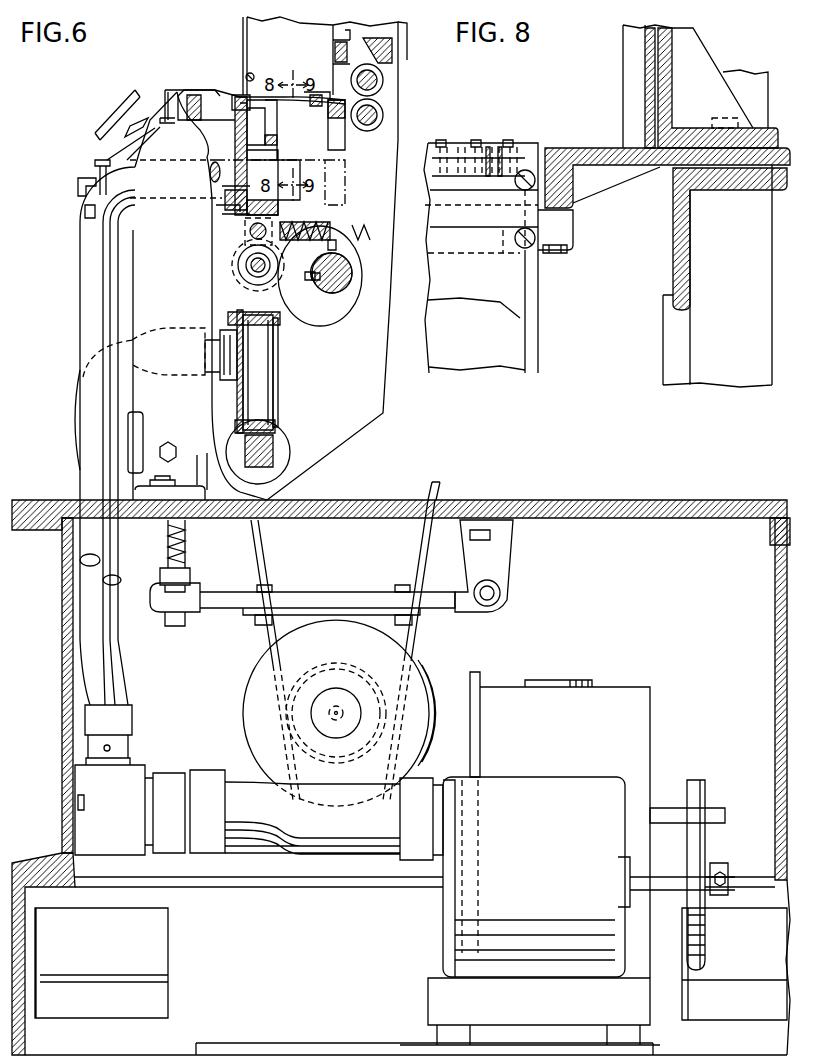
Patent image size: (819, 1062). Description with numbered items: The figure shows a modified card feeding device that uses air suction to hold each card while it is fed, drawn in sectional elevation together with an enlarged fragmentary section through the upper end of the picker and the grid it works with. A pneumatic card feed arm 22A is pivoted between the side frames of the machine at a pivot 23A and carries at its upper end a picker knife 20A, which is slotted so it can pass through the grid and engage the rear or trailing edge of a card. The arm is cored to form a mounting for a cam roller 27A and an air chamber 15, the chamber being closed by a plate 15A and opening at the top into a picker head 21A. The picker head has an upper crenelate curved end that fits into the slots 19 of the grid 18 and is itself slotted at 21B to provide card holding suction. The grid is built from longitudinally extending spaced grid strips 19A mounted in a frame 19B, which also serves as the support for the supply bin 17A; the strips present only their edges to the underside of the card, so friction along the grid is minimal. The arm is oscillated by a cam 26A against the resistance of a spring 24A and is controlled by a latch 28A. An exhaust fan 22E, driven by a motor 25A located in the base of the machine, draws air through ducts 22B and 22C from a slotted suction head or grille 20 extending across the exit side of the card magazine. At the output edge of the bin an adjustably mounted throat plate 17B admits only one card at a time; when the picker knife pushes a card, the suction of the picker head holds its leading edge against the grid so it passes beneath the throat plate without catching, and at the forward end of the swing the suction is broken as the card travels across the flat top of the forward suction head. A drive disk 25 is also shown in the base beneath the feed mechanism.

In FIG. 6, the air chamber 15 is at (262, 365).
In FIG. 6, the plate 15A is at (278, 386).
In FIG. 6, the bin 17A is at (250, 30).
In FIG. 8, the bin 17A is at (630, 105).
In FIG. 6, the throat plate 17B is at (333, 52).
In FIG. 6, the grid 18 is at (312, 91).
In FIG. 8, the grid 18 is at (560, 150).
In FIG. 6, the slots 19 is at (304, 102).
In FIG. 6, the grid strips 19A is at (223, 96).
In FIG. 8, the grid strips 19A is at (500, 142).
In FIG. 6, the frame 19B is at (168, 97).
In FIG. 6, the suction head 20 is at (340, 135).
In FIG. 6, the picker knife 20A is at (240, 97).
In FIG. 6, the picker head 21A is at (262, 126).
In FIG. 8, the picker head 21A is at (430, 213).
In FIG. 6, the slots 21B is at (255, 100).
In FIG. 8, the slots 21B is at (475, 143).
In FIG. 6, the pneumatic card feed arm 22A is at (222, 157).
In FIG. 6, the duct 22B is at (74, 414).
In FIG. 6, the duct 22C is at (85, 303).
In FIG. 6, the exhaust fan 22E is at (635, 710).
In FIG. 6, the pivot 23A is at (282, 442).
In FIG. 6, the spring 24A is at (345, 232).
In FIG. 6, the drive disk 25 is at (412, 680).
In FIG. 6, the motor 25A is at (562, 790).
In FIG. 6, the cam 26A is at (340, 312).
In FIG. 6, the cam roller 27A is at (248, 266).
In FIG. 6, the latch 28A is at (233, 208).